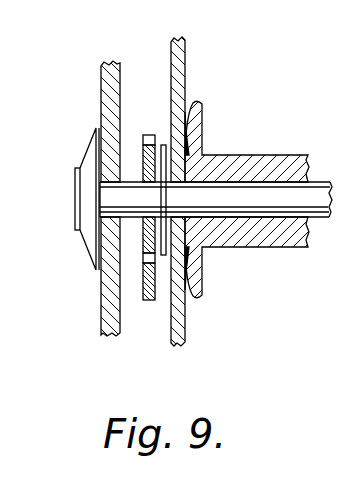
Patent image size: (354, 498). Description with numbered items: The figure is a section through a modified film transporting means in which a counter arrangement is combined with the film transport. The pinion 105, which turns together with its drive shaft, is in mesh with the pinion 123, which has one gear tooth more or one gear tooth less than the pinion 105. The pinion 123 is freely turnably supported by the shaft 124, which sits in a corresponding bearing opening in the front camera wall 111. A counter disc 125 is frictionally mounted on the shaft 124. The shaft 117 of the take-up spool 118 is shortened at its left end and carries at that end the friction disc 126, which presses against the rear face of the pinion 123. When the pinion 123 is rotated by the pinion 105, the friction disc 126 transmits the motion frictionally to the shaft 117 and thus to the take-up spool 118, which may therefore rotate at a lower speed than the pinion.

The pinion 105 is at (157, 291).
The camera wall 111 is at (107, 311).
The shaft 117 is at (297, 203).
The take-up spool 118 is at (237, 238).
The pinion 123 is at (139, 152).
The shaft 124 is at (120, 203).
The counter disc 125 is at (86, 191).
The friction disc 126 is at (169, 166).